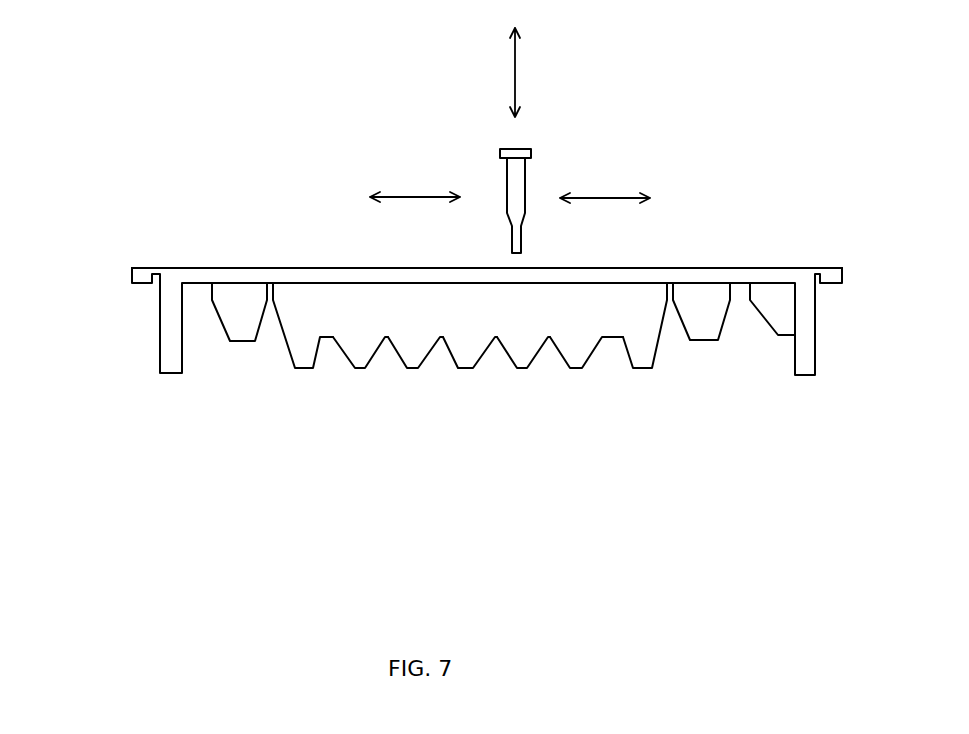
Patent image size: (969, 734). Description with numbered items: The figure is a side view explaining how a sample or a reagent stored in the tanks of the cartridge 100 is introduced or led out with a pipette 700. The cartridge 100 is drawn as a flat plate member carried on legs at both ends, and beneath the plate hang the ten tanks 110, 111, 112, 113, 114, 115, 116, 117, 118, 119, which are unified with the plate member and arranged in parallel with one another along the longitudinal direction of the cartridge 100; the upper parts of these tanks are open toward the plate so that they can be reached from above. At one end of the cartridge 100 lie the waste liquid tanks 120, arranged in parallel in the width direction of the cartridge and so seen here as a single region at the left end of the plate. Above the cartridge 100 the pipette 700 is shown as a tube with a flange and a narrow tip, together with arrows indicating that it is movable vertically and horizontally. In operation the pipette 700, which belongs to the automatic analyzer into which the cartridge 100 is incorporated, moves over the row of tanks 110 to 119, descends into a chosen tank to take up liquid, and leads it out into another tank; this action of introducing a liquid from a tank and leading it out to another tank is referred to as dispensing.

The cartridge 100 is at (265, 158).
The tank 110 is at (246, 325).
The tank 111 is at (299, 357).
The tank 112 is at (359, 357).
The tank 113 is at (415, 357).
The tank 114 is at (468, 357).
The tank 115 is at (523, 357).
The tank 116 is at (576, 357).
The tank 117 is at (643, 357).
The tank 118 is at (708, 325).
The tank 119 is at (782, 320).
The waste liquid tank 120 is at (171, 266).
The pipette 700 is at (514, 193).